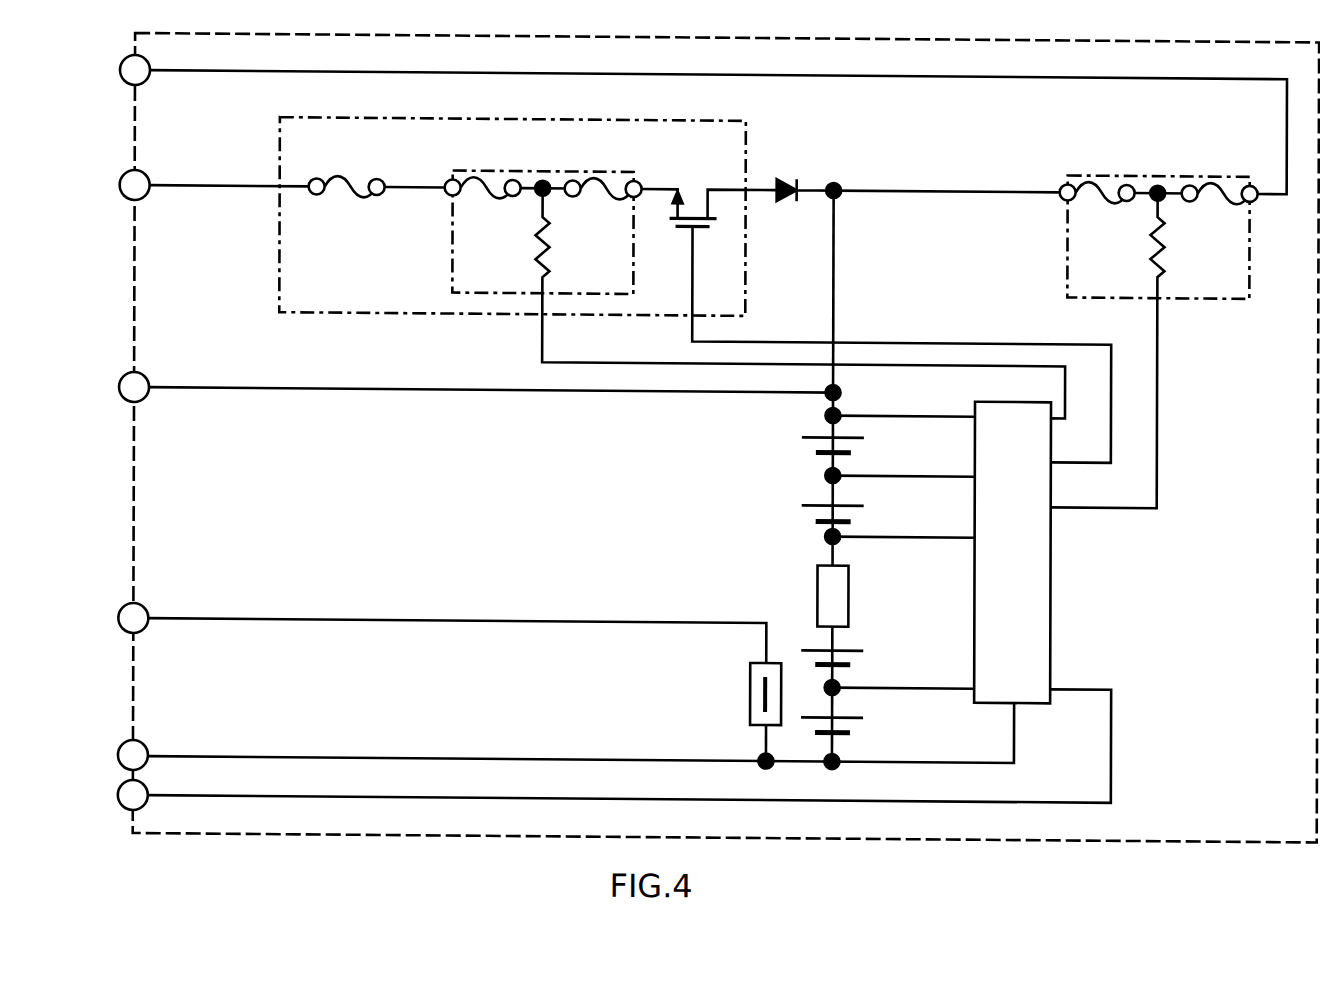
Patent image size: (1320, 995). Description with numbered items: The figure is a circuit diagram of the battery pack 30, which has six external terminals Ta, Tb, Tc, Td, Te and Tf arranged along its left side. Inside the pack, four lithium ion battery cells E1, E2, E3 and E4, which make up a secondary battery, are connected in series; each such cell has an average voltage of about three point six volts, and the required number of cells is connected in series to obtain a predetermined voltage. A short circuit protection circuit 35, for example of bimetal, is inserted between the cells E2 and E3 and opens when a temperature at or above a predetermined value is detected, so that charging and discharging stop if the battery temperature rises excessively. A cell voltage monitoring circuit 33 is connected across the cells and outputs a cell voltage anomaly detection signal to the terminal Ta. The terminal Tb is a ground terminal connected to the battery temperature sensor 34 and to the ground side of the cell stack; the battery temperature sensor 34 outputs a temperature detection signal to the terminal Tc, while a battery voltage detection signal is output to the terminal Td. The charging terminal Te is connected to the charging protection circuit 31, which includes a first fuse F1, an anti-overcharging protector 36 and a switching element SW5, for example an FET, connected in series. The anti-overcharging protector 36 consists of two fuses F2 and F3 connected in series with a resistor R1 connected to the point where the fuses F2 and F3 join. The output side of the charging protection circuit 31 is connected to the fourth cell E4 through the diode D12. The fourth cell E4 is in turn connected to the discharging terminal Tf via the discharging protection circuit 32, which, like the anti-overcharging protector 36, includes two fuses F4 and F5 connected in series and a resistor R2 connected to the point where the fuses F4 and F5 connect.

The battery pack 30 is at (803, 834).
The charging protection circuit 31 is at (295, 116).
The discharging protection circuit 32 is at (1090, 168).
The cell voltage monitoring circuit 33 is at (1052, 556).
The battery temperature sensor 34 is at (752, 675).
The short circuit protection circuit 35 is at (818, 590).
The anti-overcharging protector 36 is at (455, 168).
The first fuse F1 is at (377, 202).
The fuse F2 is at (509, 204).
The fuse F3 is at (603, 205).
The fuse F4 is at (1125, 211).
The fuse F5 is at (1220, 211).
The resistor R1 is at (799, 300).
The resistor R2 is at (1131, 347).
The switching element SW5 is at (876, 307).
The diode D12 is at (801, 170).
The lithium ion battery cell E1 is at (849, 733).
The lithium ion battery cell E2 is at (849, 661).
The lithium ion battery cell E3 is at (814, 520).
The fourth cell E4 is at (814, 448).
The terminal Ta is at (595, 750).
The ground terminal Tb is at (546, 736).
The terminal Tc is at (422, 629).
The terminal Td is at (458, 386).
The charging terminal Te is at (196, 186).
The discharging terminal Tf is at (685, 125).